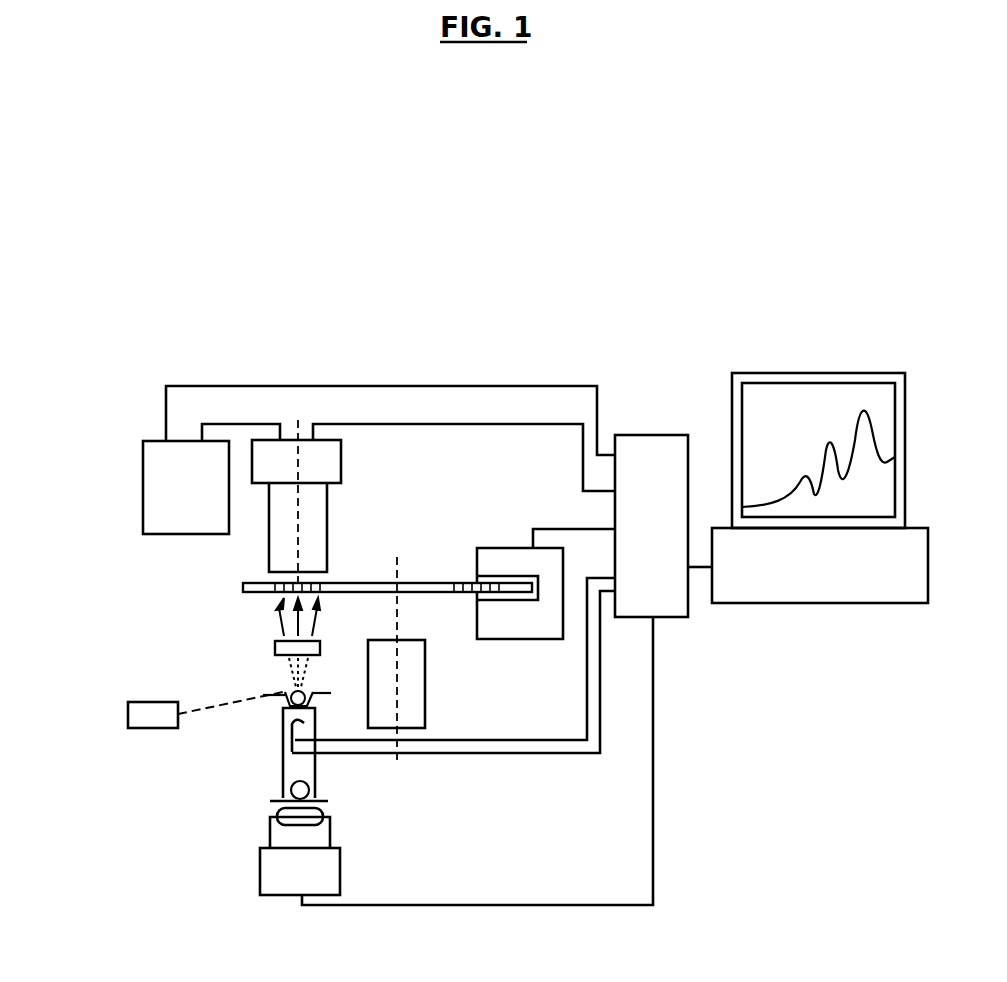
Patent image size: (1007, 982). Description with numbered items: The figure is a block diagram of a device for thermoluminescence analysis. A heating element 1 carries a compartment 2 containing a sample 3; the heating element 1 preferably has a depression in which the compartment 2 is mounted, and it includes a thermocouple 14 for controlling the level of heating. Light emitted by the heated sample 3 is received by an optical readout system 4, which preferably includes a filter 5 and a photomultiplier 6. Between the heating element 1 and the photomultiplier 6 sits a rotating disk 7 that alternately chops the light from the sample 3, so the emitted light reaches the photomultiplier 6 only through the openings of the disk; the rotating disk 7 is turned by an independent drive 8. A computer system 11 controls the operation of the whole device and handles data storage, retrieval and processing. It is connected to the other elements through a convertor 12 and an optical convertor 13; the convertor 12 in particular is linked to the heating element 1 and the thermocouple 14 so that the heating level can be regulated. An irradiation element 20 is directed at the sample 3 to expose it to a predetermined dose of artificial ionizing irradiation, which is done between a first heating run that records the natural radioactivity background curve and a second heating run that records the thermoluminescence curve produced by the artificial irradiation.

The heating element 1 is at (280, 713).
The compartment 2 is at (278, 690).
The sample 3 is at (305, 713).
The optical readout system 4 is at (155, 484).
The filter 5 is at (273, 650).
The photomultiplier 6 is at (312, 530).
The rotating disk 7 is at (243, 588).
The independent drive 8 is at (397, 760).
The computer system 11 is at (838, 580).
The convertor 12 is at (669, 617).
The optical convertor 13 is at (515, 639).
The thermocouple 14 is at (278, 735).
The irradiation element 20 is at (128, 715).